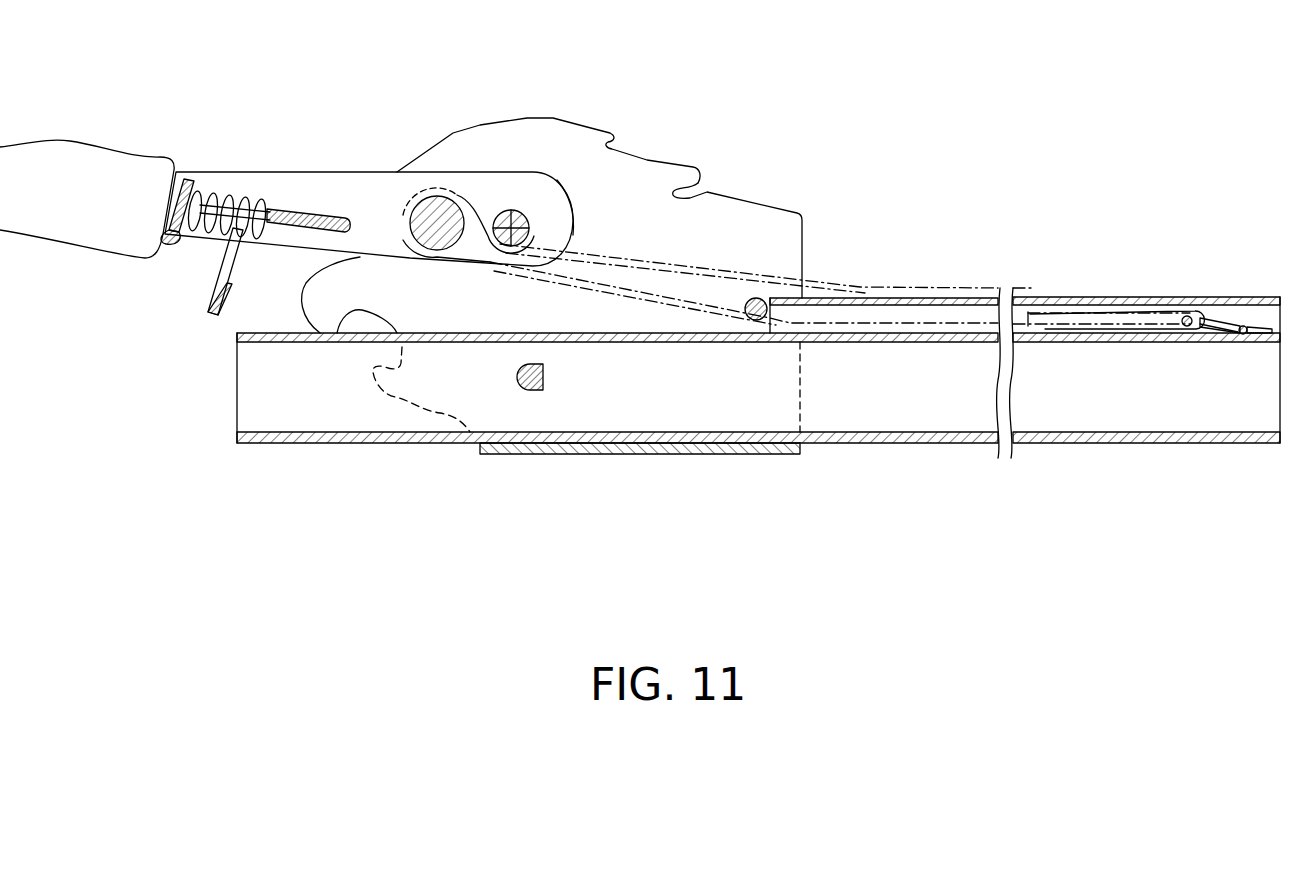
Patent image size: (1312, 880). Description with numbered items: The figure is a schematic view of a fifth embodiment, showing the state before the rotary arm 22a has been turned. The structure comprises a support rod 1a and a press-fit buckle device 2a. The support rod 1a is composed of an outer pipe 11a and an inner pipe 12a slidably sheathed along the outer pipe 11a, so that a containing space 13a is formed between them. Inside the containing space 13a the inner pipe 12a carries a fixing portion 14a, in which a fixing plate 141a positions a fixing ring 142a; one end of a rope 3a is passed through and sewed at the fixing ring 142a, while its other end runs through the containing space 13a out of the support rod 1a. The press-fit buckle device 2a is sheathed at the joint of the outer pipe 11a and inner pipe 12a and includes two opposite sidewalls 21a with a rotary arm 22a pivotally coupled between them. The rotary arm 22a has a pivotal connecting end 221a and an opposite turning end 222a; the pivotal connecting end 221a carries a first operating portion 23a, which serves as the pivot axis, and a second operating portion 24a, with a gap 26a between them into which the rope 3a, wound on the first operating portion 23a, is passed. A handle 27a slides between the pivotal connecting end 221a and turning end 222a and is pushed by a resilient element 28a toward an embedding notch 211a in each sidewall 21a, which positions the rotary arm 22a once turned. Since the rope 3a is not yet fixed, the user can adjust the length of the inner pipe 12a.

The support rod 1a is at (845, 450).
The outer pipe 11a is at (1035, 298).
The inner pipe 12a is at (290, 438).
The containing space 13a is at (863, 310).
The fixing portion 14a is at (1293, 213).
The fixing plate 141a is at (1232, 318).
The fixing ring 142a is at (1205, 308).
The press-fit buckle device 2a is at (461, 127).
The sidewalls 21a is at (503, 120).
The embedding notch 211a is at (700, 188).
The rotary arm 22a is at (273, 172).
The pivotal connecting end 221a is at (575, 222).
The turning end 222a is at (107, 157).
The first operating portion 23a is at (536, 222).
The second operating portion 24a is at (428, 210).
The gap 26a is at (483, 216).
The handle 27a is at (318, 212).
The resilient element 28a is at (213, 178).
The rope 3a is at (942, 288).